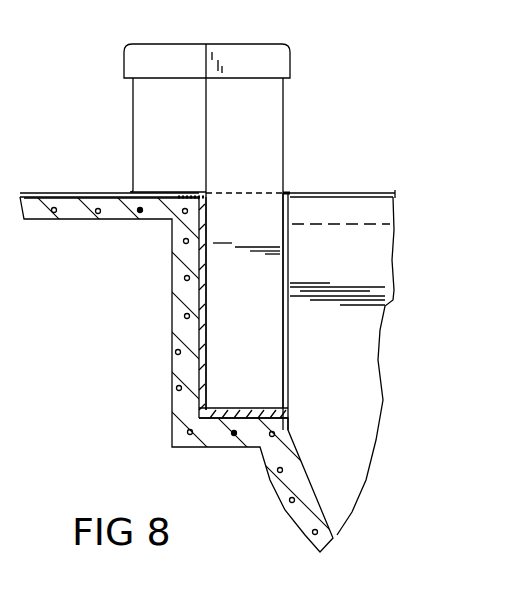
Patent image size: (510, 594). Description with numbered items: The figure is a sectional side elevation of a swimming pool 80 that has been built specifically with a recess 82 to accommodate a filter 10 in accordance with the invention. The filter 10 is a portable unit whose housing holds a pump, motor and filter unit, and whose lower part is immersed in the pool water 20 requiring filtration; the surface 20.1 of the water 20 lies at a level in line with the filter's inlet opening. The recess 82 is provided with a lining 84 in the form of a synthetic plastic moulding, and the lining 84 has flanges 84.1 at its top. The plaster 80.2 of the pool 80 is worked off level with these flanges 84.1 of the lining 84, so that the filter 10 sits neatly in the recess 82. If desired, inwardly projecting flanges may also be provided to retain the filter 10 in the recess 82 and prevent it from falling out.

The filter 10 is at (113, 90).
The water 20 is at (358, 258).
The surface of water 20.1 is at (355, 218).
The swimming pool 80 is at (348, 183).
The plaster 80.2 is at (97, 192).
The recess 82 is at (292, 178).
The lining 84 is at (200, 318).
The flanges of the lining 84.1 is at (182, 212).